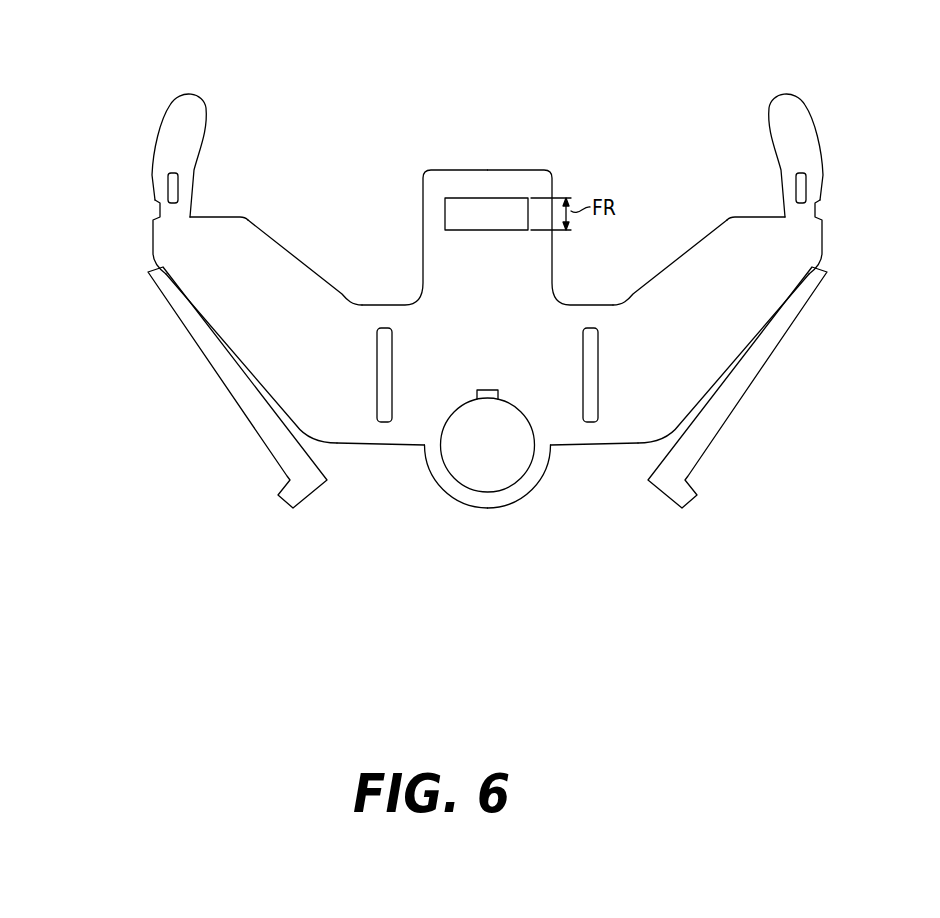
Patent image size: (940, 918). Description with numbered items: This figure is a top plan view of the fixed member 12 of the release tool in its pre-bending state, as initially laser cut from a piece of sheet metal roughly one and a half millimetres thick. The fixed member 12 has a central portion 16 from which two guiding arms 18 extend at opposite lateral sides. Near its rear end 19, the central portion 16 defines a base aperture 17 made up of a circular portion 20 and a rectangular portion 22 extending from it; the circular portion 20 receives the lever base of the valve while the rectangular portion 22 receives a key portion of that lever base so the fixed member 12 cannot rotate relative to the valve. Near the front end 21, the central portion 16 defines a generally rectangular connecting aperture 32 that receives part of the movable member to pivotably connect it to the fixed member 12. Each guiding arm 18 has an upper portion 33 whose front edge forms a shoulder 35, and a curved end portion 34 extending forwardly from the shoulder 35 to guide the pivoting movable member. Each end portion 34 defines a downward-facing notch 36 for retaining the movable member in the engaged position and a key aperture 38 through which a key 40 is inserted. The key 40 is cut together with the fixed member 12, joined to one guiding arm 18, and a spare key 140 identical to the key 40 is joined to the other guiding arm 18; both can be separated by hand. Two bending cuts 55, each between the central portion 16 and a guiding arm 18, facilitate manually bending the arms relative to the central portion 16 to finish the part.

The fixed member 12 is at (620, 137).
The central portion 16 is at (477, 337).
The base aperture 17 is at (450, 475).
The guiding arm 18 is at (287, 280).
The rear end 19 is at (487, 507).
The circular portion 20 is at (507, 468).
The front end 21 is at (473, 170).
The rectangular portion 22 is at (483, 398).
The connecting aperture 32 is at (500, 198).
The upper portion 33 is at (278, 342).
The end portion 34 is at (170, 137).
The shoulder 35 is at (244, 216).
The notch 36 is at (157, 203).
The key aperture 38 is at (180, 185).
The key 40 is at (743, 380).
The bending cut 55 is at (376, 372).
The spare key 140 is at (233, 390).